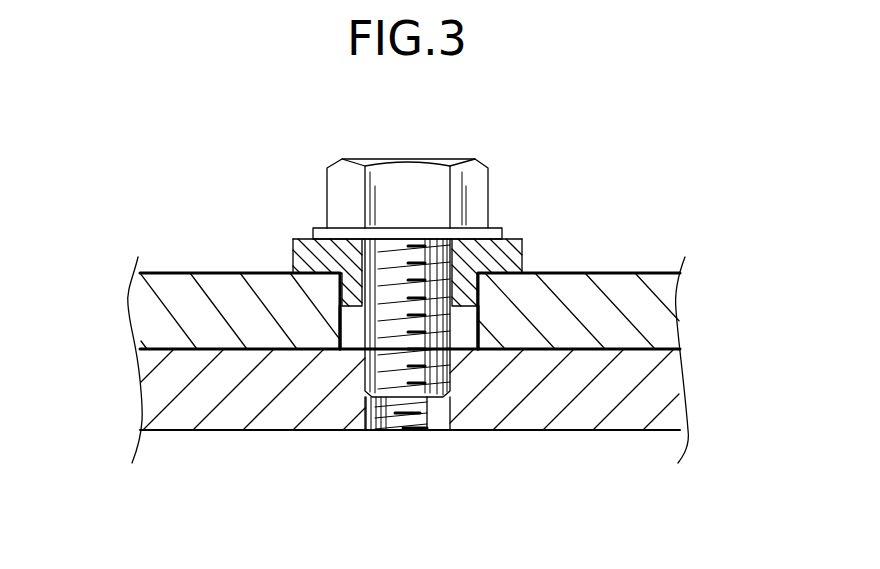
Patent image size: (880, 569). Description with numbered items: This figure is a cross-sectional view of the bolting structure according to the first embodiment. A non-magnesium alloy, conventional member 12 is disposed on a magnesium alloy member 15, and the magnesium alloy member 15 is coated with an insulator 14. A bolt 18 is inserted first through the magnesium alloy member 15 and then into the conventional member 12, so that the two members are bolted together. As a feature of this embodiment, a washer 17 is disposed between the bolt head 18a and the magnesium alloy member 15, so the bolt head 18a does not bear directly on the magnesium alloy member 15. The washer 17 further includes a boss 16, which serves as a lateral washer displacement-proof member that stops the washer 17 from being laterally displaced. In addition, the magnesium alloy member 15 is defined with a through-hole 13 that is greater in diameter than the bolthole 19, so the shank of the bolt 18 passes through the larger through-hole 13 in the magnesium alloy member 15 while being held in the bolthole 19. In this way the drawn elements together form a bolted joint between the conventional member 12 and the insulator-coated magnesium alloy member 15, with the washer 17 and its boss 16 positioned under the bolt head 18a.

The conventional member 12 is at (137, 378).
The through-hole 13 is at (347, 328).
The insulator 14 is at (232, 258).
The magnesium alloy member 15 is at (128, 301).
The boss 16 is at (475, 307).
The washer 17 is at (522, 256).
The bolt 18 is at (453, 294).
The bolt head 18a is at (488, 189).
The bolthole 19 is at (418, 242).